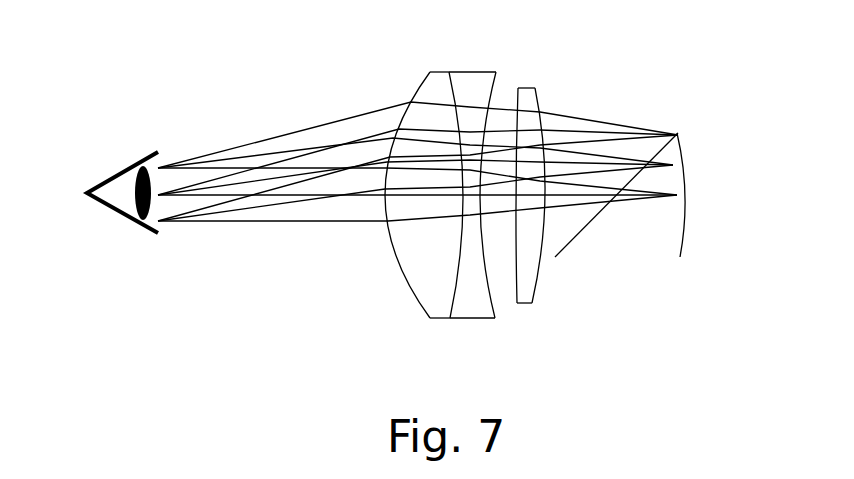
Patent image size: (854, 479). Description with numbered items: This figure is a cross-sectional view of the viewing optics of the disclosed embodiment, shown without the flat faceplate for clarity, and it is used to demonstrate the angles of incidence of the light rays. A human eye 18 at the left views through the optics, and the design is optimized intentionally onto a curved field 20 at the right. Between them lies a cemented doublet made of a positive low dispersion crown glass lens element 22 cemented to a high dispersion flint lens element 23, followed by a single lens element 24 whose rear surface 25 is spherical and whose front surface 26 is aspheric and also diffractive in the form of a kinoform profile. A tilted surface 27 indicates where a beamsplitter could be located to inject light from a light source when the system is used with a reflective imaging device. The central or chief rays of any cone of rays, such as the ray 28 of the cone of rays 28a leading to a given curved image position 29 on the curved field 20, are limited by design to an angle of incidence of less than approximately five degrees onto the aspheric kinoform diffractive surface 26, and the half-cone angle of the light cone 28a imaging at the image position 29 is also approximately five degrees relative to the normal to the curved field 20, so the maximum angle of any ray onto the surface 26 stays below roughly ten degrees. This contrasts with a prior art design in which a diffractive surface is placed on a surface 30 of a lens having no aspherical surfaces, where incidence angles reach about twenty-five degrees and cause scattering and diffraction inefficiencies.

The human eye 18 is at (123, 215).
The curved field 20 is at (678, 233).
The crown glass lens element 22 is at (432, 282).
The flint lens element 23 is at (473, 308).
The single lens element 24 is at (578, 226).
The rear surface 25 is at (535, 296).
The aspheric kinoform diffractive front surface 26 is at (522, 120).
The tilted surface 27 is at (654, 149).
The chief ray 28 is at (418, 116).
The cone of rays 28a is at (608, 118).
The curved image position 29 is at (683, 131).
The surface 30 is at (498, 219).